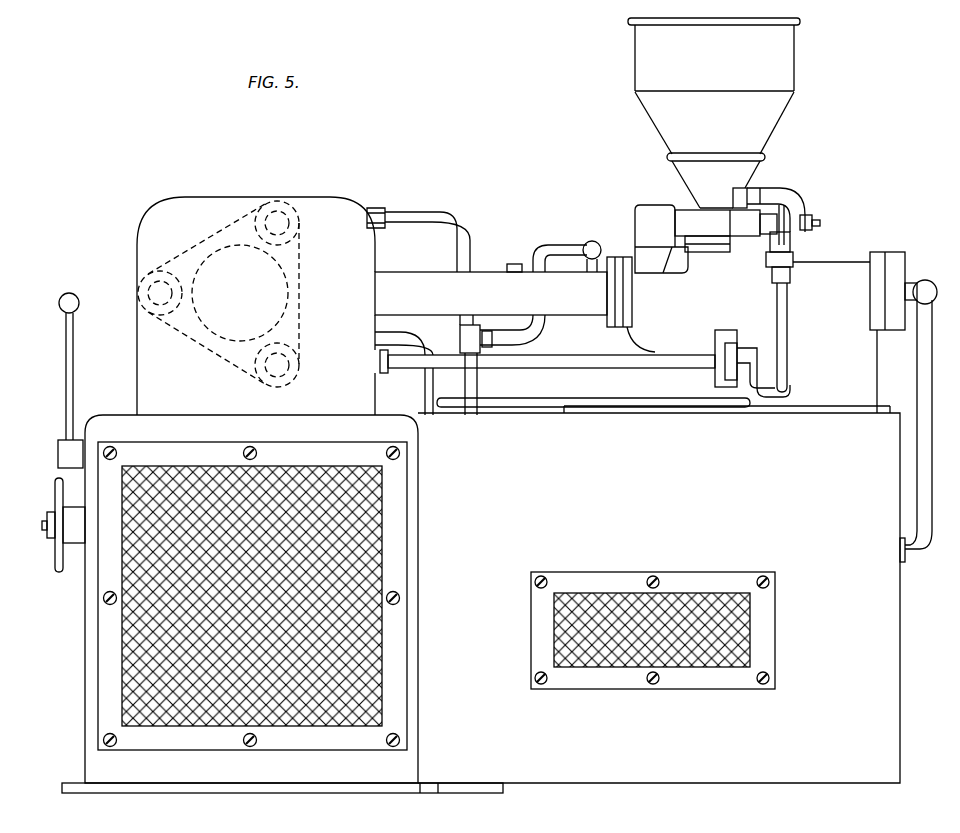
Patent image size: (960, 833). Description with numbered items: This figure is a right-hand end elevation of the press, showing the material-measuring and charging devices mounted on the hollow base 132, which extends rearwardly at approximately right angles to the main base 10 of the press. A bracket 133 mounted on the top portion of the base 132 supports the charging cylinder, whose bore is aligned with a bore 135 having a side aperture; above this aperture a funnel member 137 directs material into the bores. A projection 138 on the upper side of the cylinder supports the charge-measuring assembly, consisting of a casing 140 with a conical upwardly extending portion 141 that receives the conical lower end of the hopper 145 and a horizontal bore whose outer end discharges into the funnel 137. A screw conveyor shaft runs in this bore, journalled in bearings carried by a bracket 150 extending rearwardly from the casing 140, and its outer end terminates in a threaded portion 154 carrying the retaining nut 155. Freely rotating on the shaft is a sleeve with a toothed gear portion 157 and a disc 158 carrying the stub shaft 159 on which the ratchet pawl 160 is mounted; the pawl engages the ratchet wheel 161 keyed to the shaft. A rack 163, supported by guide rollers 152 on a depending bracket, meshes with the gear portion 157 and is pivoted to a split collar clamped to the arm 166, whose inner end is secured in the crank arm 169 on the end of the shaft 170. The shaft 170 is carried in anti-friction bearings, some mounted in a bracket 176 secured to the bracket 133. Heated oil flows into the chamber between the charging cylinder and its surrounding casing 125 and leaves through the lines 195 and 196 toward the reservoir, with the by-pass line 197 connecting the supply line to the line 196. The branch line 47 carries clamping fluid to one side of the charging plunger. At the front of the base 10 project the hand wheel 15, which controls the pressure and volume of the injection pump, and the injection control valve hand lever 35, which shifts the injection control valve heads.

The base 10 is at (92, 638).
The hand wheel 15 is at (57, 562).
The injection control valve hand lever 35 is at (73, 363).
The branch line 47 is at (917, 383).
The casing 125 is at (455, 263).
The hollow base 132 is at (804, 500).
The bracket 133 is at (640, 336).
The bore 135 is at (628, 257).
The funnel member 137 is at (650, 216).
The projection 138 is at (702, 231).
The casing 140 is at (720, 229).
The conical upwardly extending portion 141 is at (742, 193).
The hopper 145 is at (635, 53).
The bracket 150 is at (790, 188).
The guide rollers 152 is at (788, 248).
The threaded portion 154 is at (820, 224).
The retaining nut 155 is at (812, 218).
The gear portion 157 is at (774, 203).
The disc 158 is at (787, 205).
The stub shaft 159 is at (802, 208).
The ratchet pawl 160 is at (797, 200).
The ratchet wheel 161 is at (788, 235).
The rack 163 is at (770, 227).
The arm 166 is at (788, 313).
The crank arm 169 is at (768, 397).
The shaft 170 is at (609, 362).
The bracket 176 is at (726, 330).
The line 195 is at (562, 246).
The line 196 is at (472, 382).
The by-pass line 197 is at (457, 216).